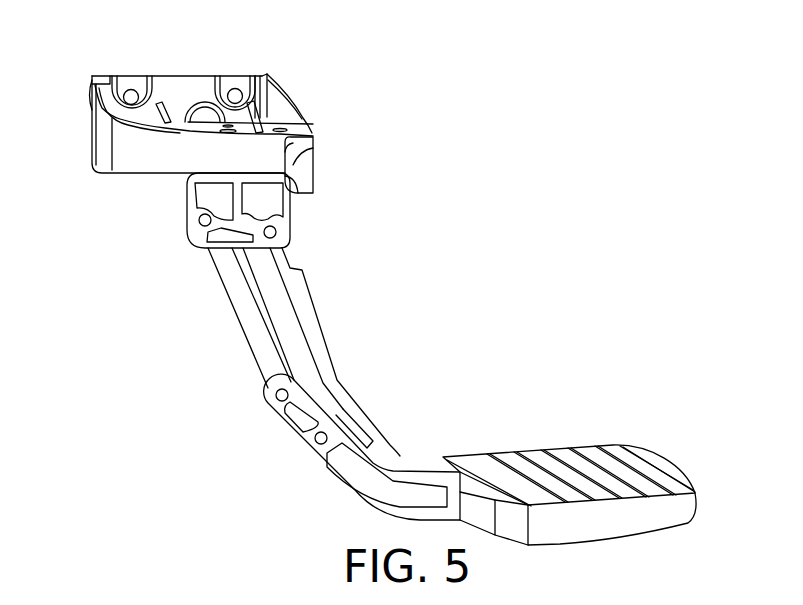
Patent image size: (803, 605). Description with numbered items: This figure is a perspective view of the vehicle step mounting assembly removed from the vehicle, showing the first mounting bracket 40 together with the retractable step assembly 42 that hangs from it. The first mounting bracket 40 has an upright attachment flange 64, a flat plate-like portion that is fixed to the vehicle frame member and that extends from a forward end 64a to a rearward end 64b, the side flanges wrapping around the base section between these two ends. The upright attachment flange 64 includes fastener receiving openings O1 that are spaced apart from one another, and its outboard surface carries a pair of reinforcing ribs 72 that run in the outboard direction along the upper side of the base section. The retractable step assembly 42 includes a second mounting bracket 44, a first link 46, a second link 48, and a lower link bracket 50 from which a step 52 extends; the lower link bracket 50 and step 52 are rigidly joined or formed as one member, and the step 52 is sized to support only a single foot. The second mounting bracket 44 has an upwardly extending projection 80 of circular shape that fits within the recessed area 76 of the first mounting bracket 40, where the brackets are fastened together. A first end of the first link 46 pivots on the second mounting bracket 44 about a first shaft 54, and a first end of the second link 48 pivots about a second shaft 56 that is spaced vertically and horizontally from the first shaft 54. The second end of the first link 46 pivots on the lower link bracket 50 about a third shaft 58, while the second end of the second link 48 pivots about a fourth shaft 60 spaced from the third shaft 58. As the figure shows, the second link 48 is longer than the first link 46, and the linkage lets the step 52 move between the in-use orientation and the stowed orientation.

The first mounting bracket 40 is at (162, 63).
The retractable step assembly 42 is at (365, 128).
The second mounting bracket 44 is at (314, 182).
The first link 46 is at (240, 305).
The second link 48 is at (316, 322).
The lower link bracket 50 is at (389, 462).
The step 52 is at (581, 445).
The first shaft 54 is at (199, 221).
The second shaft 56 is at (276, 232).
The third shaft 58 is at (275, 394).
The fourth shaft 60 is at (316, 443).
The upright attachment flange 64 is at (201, 98).
The forward end of the upright attachment flange 64a is at (92, 113).
The rearward end of the upright attachment flange 64b is at (262, 75).
The reinforcing ribs 72 is at (165, 110).
The recessed area 76 is at (313, 168).
The upwardly extending projection 80 is at (306, 152).
The fastener receiving opening O1 is at (132, 89).